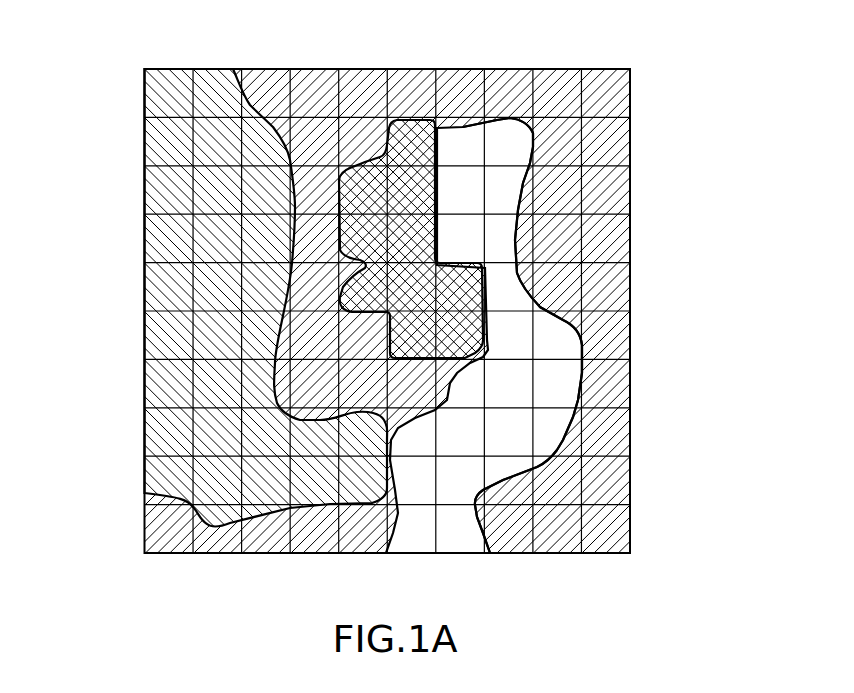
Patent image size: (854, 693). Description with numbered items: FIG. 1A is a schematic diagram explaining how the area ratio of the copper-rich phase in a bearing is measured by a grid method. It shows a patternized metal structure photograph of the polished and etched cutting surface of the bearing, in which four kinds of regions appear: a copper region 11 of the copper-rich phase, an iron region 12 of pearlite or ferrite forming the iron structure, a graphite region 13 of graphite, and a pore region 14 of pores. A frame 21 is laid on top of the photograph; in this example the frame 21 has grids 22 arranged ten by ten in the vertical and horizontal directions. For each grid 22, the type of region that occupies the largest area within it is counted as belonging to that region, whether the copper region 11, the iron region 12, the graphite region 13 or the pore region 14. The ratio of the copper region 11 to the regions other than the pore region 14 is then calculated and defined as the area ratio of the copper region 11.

The copper region 11 is at (258, 530).
The iron region 12 is at (170, 382).
The graphite region 13 is at (406, 128).
The pore region 14 is at (448, 530).
The frame 21 is at (630, 102).
The grids 22 is at (512, 182).